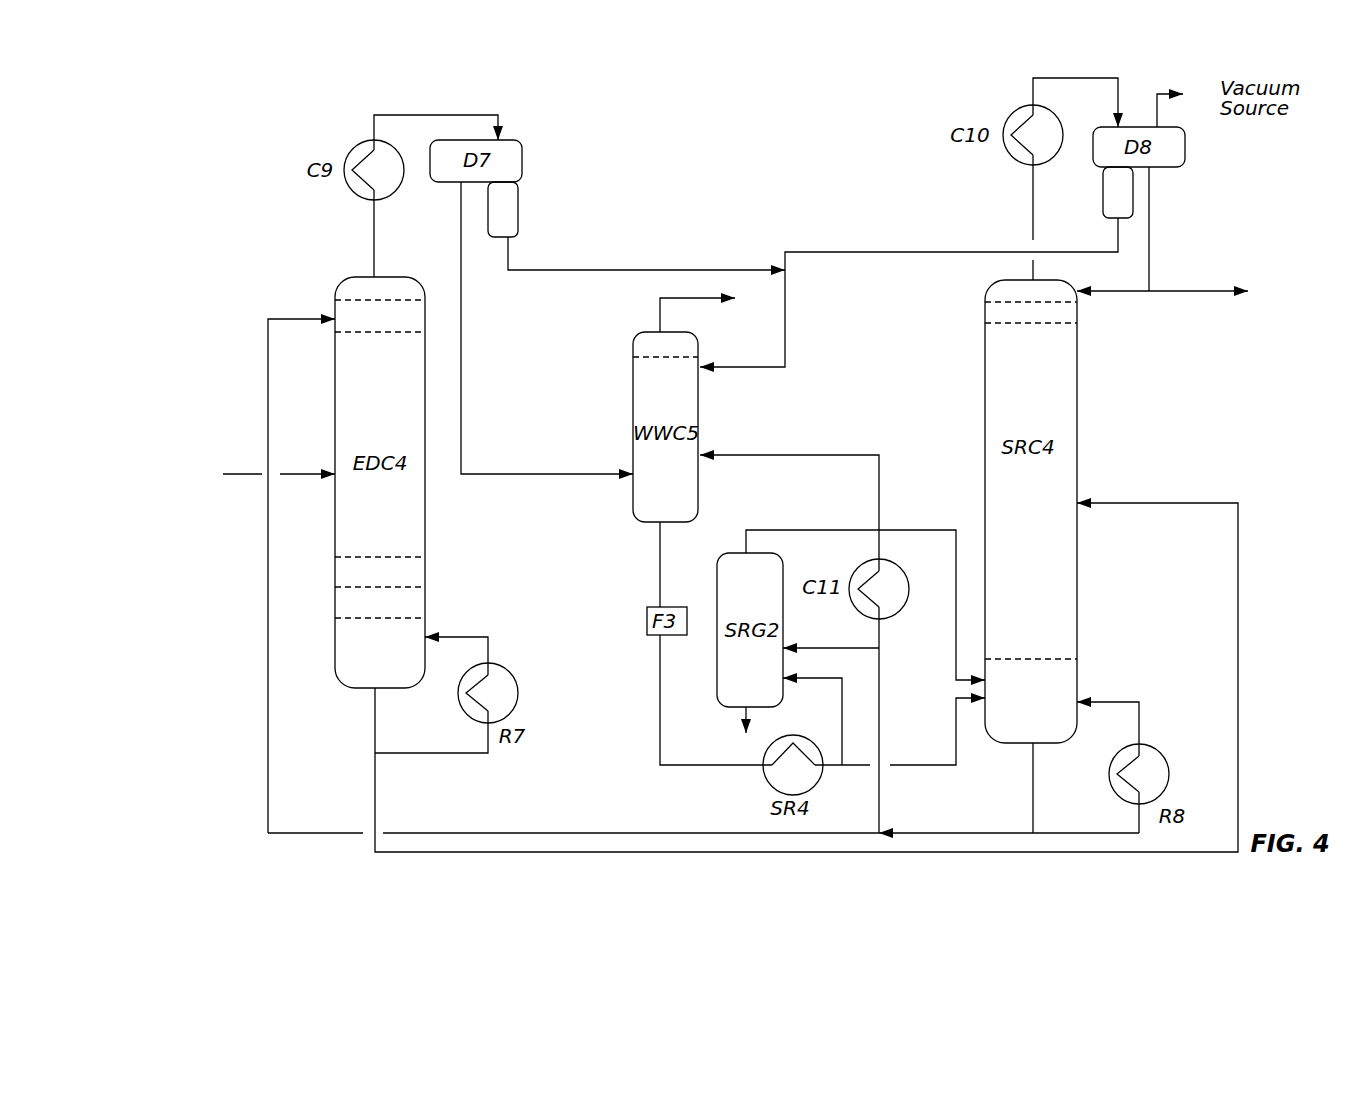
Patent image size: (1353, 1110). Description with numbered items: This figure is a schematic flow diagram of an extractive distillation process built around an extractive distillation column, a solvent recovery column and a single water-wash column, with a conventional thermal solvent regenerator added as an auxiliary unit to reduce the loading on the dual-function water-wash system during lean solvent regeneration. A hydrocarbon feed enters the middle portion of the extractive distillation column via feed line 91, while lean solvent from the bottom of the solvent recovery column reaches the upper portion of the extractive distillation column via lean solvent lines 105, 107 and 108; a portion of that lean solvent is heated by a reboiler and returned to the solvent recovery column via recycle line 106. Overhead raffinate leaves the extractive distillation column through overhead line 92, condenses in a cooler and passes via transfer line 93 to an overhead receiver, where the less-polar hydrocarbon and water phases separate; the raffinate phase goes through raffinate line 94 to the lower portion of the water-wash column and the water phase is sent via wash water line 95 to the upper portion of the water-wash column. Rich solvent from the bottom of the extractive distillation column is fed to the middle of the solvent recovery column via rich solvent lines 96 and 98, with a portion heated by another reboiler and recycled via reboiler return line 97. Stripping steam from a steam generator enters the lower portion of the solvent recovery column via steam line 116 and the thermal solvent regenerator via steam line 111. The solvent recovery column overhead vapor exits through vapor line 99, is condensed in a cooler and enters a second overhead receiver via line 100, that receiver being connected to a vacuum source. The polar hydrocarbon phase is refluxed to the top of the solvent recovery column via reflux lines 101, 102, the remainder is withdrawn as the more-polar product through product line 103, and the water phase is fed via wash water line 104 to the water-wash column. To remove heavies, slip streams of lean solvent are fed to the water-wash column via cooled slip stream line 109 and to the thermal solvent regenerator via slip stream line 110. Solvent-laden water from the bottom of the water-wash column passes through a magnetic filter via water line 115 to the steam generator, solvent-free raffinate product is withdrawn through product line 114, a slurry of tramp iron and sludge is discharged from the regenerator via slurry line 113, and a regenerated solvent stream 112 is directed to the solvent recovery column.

The hydrocarbon feed line 91 is at (279, 461).
The overhead raffinate line 92 is at (390, 233).
The condensed raffinate transfer line 93 is at (436, 118).
The raffinate phase line 94 is at (547, 328).
The wash water line from D7 95 is at (646, 253).
The rich solvent line 96 is at (570, 770).
The reboiler R7 recycle line 97 is at (456, 644).
The rich solvent feed line to SRC4 98 is at (1019, 665).
The SRC4 overhead vapor line 99 is at (1016, 217).
The condensed overhead line to D8 100 is at (1075, 102).
The polar hydrocarbon phase line 101 is at (1170, 229).
The reflux line to SRC4 102 is at (1113, 276).
The more-polar hydrocarbon product line 103 is at (1198, 276).
The wash water line from D8 104 is at (909, 292).
The lean solvent bottoms line 105 is at (1055, 788).
The reboiler R8 recycle line 106 is at (1130, 767).
The lean solvent recycle line 107 is at (703, 820).
The lean solvent inlet line to EDC4 108 is at (301, 563).
The lean solvent slip stream line to WWC5 109 is at (789, 499).
The lean solvent slip stream line to SRG2 110 is at (831, 720).
The stripping steam line to SRG2 111 is at (832, 718).
The regenerated solvent stream 112 is at (865, 592).
The slurry discharge line 113 is at (738, 734).
The solvent-free raffinate product line 114 is at (697, 315).
The solvent-laden water line 115 is at (716, 643).
The stripping steam line to SRC4 116 is at (900, 731).